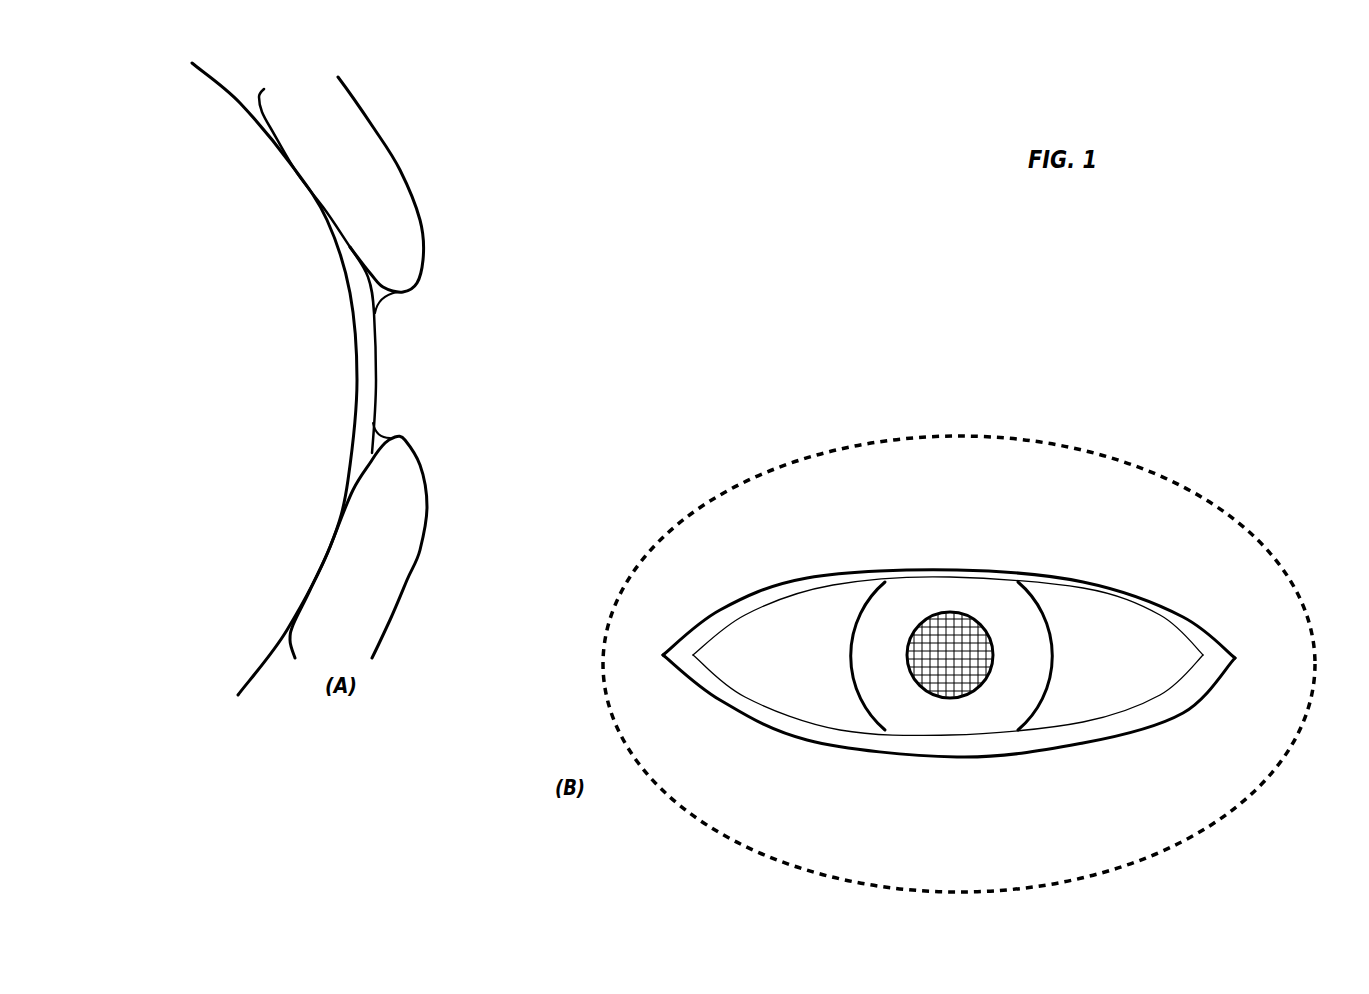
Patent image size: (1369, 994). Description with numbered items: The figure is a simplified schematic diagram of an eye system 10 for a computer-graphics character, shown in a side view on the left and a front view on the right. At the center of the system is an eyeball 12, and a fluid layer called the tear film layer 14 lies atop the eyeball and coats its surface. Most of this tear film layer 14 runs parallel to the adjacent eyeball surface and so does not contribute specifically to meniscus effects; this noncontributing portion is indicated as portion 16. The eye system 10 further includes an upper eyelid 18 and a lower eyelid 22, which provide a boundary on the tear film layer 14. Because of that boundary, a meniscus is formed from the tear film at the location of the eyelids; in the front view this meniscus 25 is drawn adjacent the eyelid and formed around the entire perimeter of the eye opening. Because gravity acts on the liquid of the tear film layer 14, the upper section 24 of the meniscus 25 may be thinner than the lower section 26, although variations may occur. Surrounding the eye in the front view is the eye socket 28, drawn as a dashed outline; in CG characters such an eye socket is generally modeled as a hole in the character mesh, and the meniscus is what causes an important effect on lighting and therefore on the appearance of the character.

The eye system 10 is at (519, 151).
The eyeball 12 is at (823, 666).
The tear film layer 14 is at (400, 361).
The noncontributing portion of the tear film layer 16 is at (375, 387).
The upper eyelid 18 is at (392, 148).
The lower eyelid 22 is at (427, 510).
The upper section of the meniscus 24 is at (382, 305).
The meniscus 25 is at (1178, 598).
The lower section of the meniscus 26 is at (387, 435).
The eye socket 28 is at (974, 435).